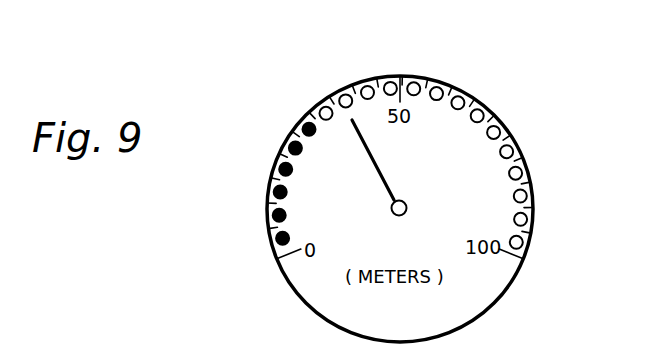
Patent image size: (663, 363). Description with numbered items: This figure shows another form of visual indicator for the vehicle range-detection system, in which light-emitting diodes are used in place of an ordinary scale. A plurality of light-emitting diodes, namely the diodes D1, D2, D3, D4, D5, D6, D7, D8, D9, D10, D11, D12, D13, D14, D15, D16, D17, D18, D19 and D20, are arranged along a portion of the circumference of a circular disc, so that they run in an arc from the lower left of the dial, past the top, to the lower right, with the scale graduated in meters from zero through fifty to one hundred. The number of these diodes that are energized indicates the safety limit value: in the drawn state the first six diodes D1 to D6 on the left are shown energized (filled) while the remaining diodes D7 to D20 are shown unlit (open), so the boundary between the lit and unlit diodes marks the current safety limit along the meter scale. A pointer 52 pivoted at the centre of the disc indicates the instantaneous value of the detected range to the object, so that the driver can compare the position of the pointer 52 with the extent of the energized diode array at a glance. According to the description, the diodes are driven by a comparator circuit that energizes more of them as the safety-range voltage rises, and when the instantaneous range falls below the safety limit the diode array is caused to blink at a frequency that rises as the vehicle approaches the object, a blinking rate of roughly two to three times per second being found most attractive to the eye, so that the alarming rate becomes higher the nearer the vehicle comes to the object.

The pointer 52 is at (380, 177).
The light-emitting diode D1 is at (276, 240).
The light-emitting diode D2 is at (272, 216).
The light-emitting diode D3 is at (273, 191).
The light-emitting diode D4 is at (279, 167).
The light-emitting diode D5 is at (289, 145).
The light-emitting diode D6 is at (304, 125).
The light-emitting diode D7 is at (322, 108).
The light-emitting diode D8 is at (343, 95).
The light-emitting diode D9 is at (366, 86).
The light-emitting diode D10 is at (390, 81).
The light-emitting diode D11 is at (414, 82).
The light-emitting diode D12 is at (439, 87).
The light-emitting diode D13 is at (461, 97).
The light-emitting diode D14 is at (482, 110).
The light-emitting diode D15 is at (499, 128).
The light-emitting diode D16 is at (513, 148).
The light-emitting diode D17 is at (522, 171).
The light-emitting diode D18 is at (527, 195).
The light-emitting diode D19 is at (528, 220).
The light-emitting diode D20 is at (523, 244).